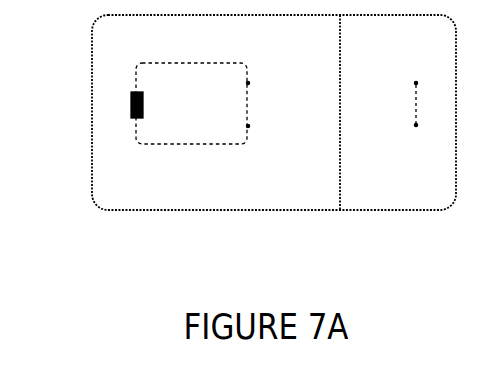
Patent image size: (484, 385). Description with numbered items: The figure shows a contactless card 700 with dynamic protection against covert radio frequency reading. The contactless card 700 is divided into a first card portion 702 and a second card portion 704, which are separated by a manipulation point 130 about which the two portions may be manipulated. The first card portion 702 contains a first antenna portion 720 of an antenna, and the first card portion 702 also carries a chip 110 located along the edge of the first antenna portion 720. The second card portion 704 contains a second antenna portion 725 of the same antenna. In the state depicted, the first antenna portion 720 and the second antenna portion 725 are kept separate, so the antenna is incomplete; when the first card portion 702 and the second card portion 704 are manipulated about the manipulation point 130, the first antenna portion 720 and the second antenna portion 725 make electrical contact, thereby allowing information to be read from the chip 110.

The contactless card 700 is at (92, 225).
The first card portion 702 is at (198, 50).
The second card portion 704 is at (378, 51).
The chip 110 is at (125, 103).
The first antenna portion 720 is at (208, 152).
The second antenna portion 725 is at (413, 106).
The manipulation point 130 is at (338, 213).